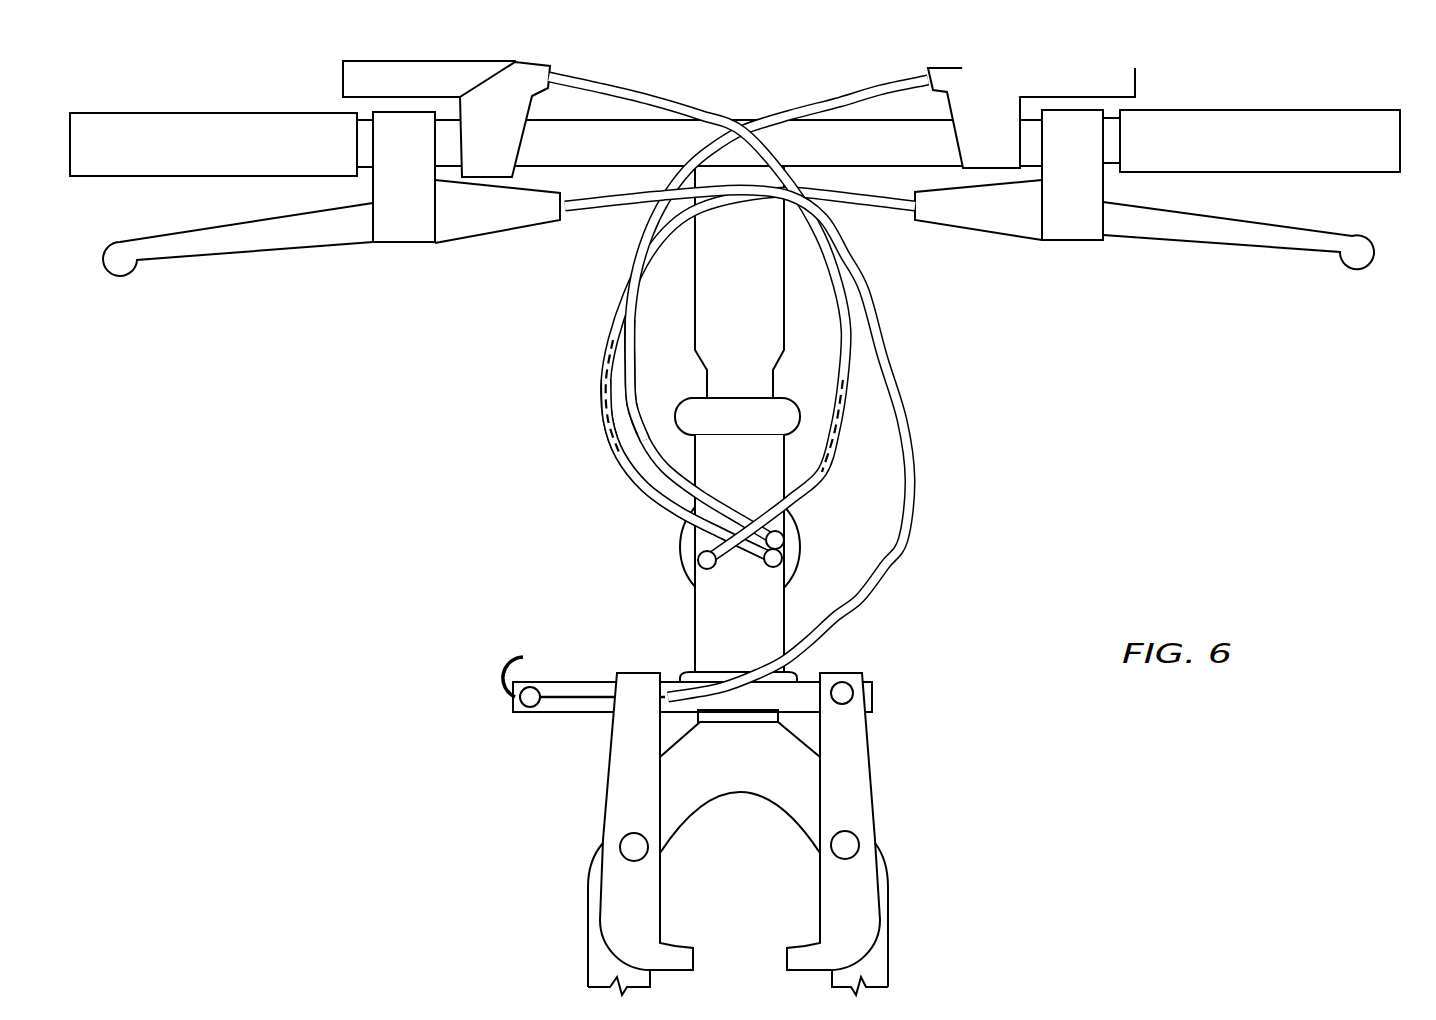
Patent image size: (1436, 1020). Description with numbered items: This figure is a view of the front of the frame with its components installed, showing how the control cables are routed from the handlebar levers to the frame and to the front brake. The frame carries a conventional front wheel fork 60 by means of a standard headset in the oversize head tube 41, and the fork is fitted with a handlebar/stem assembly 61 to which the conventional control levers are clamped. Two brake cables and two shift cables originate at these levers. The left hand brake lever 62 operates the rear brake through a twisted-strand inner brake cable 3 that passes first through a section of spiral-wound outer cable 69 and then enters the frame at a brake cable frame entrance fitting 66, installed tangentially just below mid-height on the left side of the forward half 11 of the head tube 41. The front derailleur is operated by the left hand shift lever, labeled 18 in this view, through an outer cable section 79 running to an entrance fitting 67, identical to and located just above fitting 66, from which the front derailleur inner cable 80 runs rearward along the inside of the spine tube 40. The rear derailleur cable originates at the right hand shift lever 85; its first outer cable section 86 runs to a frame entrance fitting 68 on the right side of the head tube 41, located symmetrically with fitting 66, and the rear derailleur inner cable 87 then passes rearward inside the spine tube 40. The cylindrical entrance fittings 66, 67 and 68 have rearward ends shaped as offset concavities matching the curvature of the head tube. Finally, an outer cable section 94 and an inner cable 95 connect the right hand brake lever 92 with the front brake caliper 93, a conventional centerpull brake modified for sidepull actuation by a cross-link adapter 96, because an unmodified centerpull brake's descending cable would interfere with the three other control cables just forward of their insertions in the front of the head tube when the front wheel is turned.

The inner brake cable 3 is at (607, 372).
The forward half of the head tube 11 is at (702, 419).
The right brake lever 18 is at (1140, 84).
The spine tube 40 is at (680, 538).
The head tube 41 is at (692, 632).
The front wheel fork 60 is at (773, 806).
The handlebar/stem assembly 61 is at (778, 305).
The left hand brake lever 62 is at (1060, 243).
The brake cable frame entrance fitting 66 is at (795, 557).
The front derailleur cable entrance fitting 67 is at (795, 532).
The rear derailleur cable frame entrance fitting 68 is at (697, 562).
The outer cable 69 is at (630, 468).
The outer cable section 79 is at (729, 381).
The front derailleur inner cable 80 is at (646, 418).
The right hand shift lever 85 is at (343, 82).
The rear derailleur first outer cable section 86 is at (715, 325).
The rear derailleur inner cable 87 is at (876, 414).
The right hand brake lever 92 is at (438, 242).
The front brake caliper 93 is at (886, 781).
The outer cable section 94 is at (910, 525).
The inner cable 95 is at (490, 679).
The cross-link adapter 96 is at (575, 712).